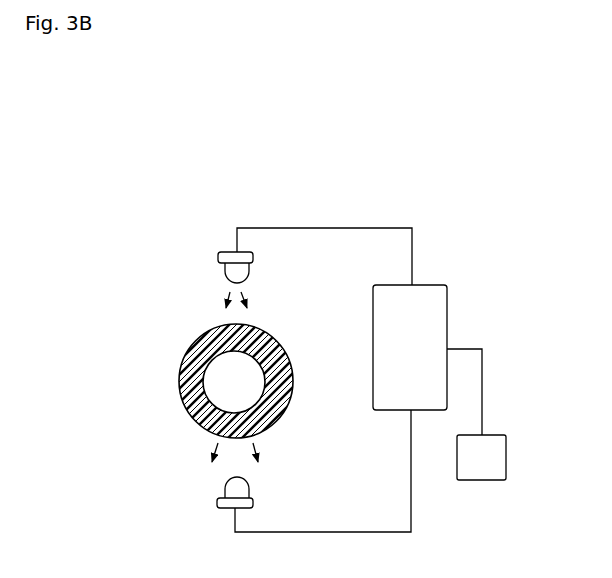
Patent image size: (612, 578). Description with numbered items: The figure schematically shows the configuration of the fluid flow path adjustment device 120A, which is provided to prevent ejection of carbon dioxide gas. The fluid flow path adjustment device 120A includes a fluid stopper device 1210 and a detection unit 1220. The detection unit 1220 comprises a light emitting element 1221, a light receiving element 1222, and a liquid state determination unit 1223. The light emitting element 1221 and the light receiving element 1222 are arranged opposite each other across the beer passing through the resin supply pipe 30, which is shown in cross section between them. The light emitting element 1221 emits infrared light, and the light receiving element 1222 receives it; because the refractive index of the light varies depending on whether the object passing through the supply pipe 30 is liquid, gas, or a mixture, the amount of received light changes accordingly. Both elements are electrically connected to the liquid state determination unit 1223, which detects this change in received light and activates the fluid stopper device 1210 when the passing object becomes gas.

The fluid flow path adjustment device 120A is at (452, 108).
The detection unit 1220 is at (289, 200).
The light emitting element 1221 is at (228, 253).
The light receiving element 1222 is at (222, 510).
The liquid state determination unit 1223 is at (428, 275).
The fluid stopper device 1210 is at (478, 482).
The supply pipe 30 is at (182, 383).